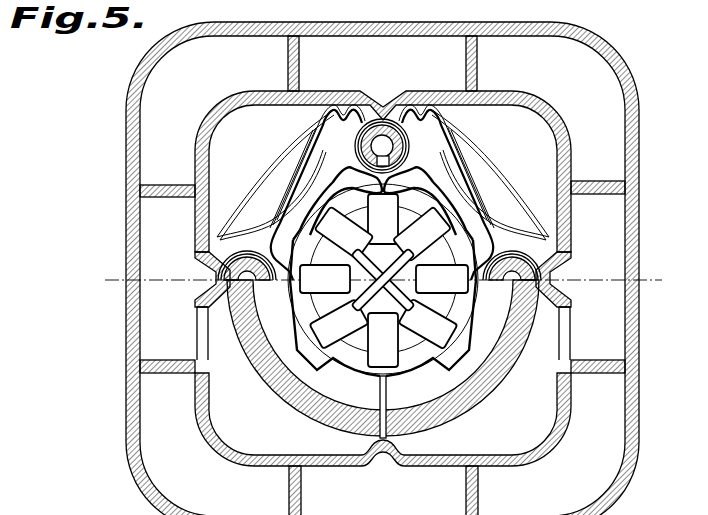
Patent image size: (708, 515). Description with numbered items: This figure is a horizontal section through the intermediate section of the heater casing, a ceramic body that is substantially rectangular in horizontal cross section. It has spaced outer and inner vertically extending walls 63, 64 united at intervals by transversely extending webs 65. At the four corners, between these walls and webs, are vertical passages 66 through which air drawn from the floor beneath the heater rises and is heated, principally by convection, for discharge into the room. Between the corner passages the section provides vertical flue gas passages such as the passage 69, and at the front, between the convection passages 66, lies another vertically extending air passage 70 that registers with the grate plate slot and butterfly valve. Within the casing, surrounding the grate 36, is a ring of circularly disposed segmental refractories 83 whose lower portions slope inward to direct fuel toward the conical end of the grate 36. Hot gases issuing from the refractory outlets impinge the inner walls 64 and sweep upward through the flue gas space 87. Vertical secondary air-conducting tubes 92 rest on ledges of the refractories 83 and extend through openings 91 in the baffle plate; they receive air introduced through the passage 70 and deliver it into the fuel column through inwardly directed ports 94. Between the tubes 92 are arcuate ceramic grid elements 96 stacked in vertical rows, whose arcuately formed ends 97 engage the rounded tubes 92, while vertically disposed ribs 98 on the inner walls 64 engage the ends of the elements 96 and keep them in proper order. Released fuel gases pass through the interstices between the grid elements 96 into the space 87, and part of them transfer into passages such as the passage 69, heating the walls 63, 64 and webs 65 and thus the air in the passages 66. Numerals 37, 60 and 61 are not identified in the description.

The grate 36 is at (435, 323).
The rotor casing 37 is at (462, 232).
The outer housing wall 60 is at (600, 107).
The side wall 61 is at (168, 326).
The outer vertically extending wall 63 is at (143, 60).
The inner vertically extending wall 64 is at (560, 413).
The transversely extending webs 65 is at (620, 188).
The vertical passages 66 is at (652, 460).
The vertical flue gas passage 69 is at (617, 345).
The vertically extending air passage 70 is at (360, 65).
The segmental refractories 83 is at (258, 368).
The flue gas space 87 is at (383, 274).
The openings 91 is at (213, 239).
The secondary air-conducting tubes 92 is at (403, 137).
The ports 94 is at (386, 140).
The ceramic grid elements 96 is at (302, 200).
The arcuately formed ends 97 is at (532, 256).
The vertically disposed ribs 98 is at (379, 103).